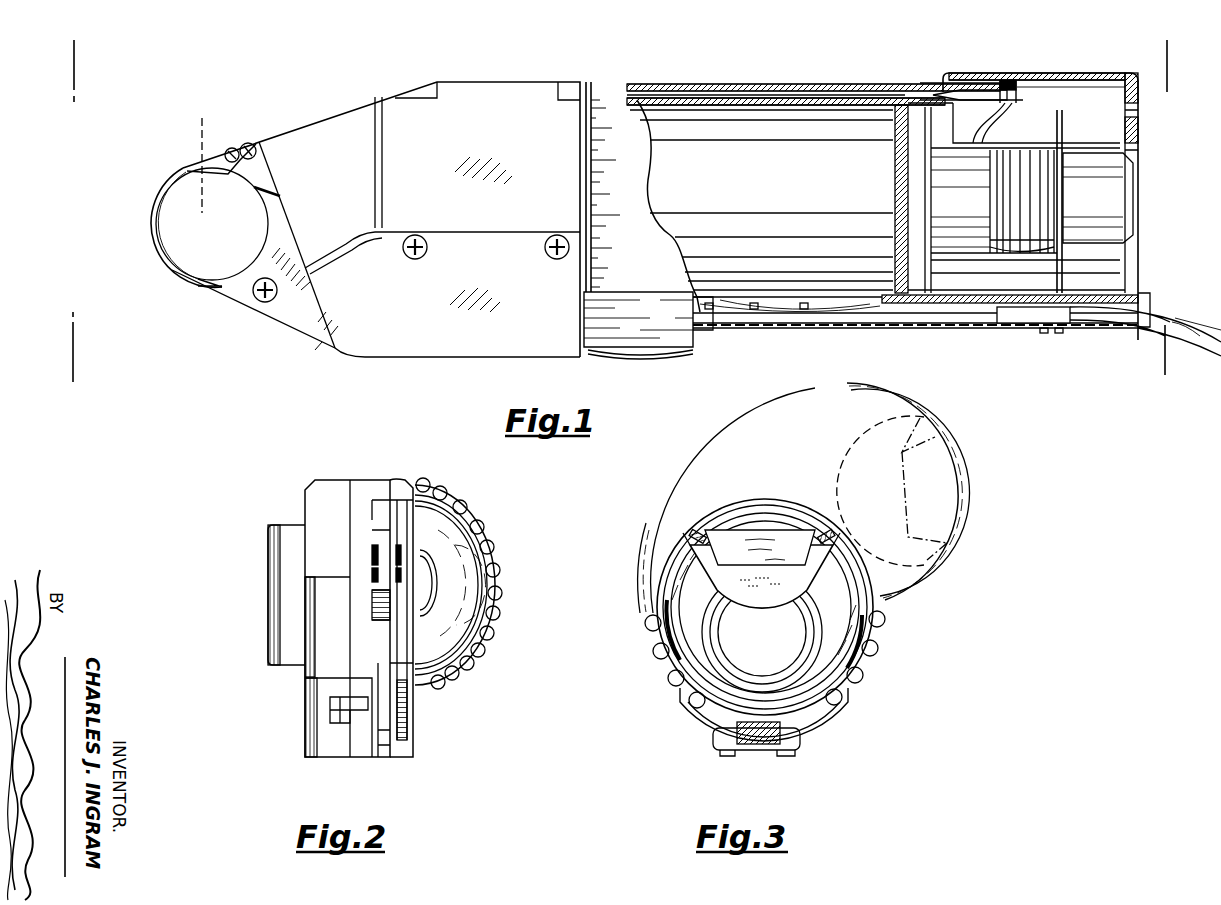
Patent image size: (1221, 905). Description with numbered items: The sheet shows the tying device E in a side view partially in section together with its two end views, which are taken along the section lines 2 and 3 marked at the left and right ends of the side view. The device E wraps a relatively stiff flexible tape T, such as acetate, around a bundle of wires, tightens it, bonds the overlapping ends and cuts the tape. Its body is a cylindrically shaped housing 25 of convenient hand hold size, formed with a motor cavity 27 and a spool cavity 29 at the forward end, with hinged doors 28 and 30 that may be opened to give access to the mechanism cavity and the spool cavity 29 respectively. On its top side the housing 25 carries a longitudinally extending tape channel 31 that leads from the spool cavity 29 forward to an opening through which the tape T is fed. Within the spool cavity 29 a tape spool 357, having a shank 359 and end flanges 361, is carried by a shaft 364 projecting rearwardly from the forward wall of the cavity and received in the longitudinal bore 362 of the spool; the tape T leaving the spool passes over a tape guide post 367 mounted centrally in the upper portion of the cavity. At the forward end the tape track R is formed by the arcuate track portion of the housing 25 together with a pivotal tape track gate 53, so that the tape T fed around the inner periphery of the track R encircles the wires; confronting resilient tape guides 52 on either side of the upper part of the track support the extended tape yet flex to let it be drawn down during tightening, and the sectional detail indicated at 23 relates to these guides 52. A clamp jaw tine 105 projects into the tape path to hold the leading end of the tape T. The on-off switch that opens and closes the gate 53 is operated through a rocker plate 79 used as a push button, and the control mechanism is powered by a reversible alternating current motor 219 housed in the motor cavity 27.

In FIG. 1, the section line 2— 2 is at (64, 49).
In FIG. 1, the section line 3— 3 is at (1178, 49).
In FIG. 1, the offset dimension of stop lug 23 is at (195, 131).
In FIG. 1, the housing 25 is at (871, 86).
In FIG. 2, the housing 25 is at (475, 520).
In FIG. 3, the housing 25 is at (877, 642).
In FIG. 1, the motor cavity 27 is at (864, 300).
In FIG. 1, the hinged door 28 is at (518, 100).
In FIG. 2, the hinged door 28 is at (405, 483).
In FIG. 1, the spool cavity 29 is at (1047, 105).
In FIG. 3, the spool cavity 29 is at (730, 523).
In FIG. 1, the hinged door 30 is at (1101, 74).
In FIG. 3, the hinged door 30 is at (803, 488).
In FIG. 1, the tape channel 31 is at (782, 96).
In FIG. 1, the resilient tape guides 52 is at (213, 170).
In FIG. 2, the resilient tape guides 52 is at (372, 577).
In FIG. 1, the tape track gate 53 is at (172, 273).
In FIG. 2, the tape track gate 53 is at (377, 640).
In FIG. 1, the rocker plate 79 is at (672, 352).
In FIG. 1, the tine 105 is at (258, 193).
In FIG. 1, the motor 219 is at (713, 130).
In FIG. 1, the tape spool 357 is at (1056, 200).
In FIG. 1, the shank 359 is at (930, 200).
In FIG. 1, the end flanges 361 is at (927, 140).
In FIG. 3, the end flanges 361 is at (680, 657).
In FIG. 1, the longitudinal bore 362 is at (1063, 153).
In FIG. 1, the shaft 364 is at (1123, 181).
In FIG. 3, the shaft 364 is at (762, 650).
In FIG. 1, the tape guide post 367 is at (1005, 82).
In FIG. 1, the tying device E is at (757, 84).
In FIG. 1, the tape track R is at (152, 211).
In FIG. 2, the tape track R is at (373, 603).
In FIG. 1, the tape T is at (988, 90).